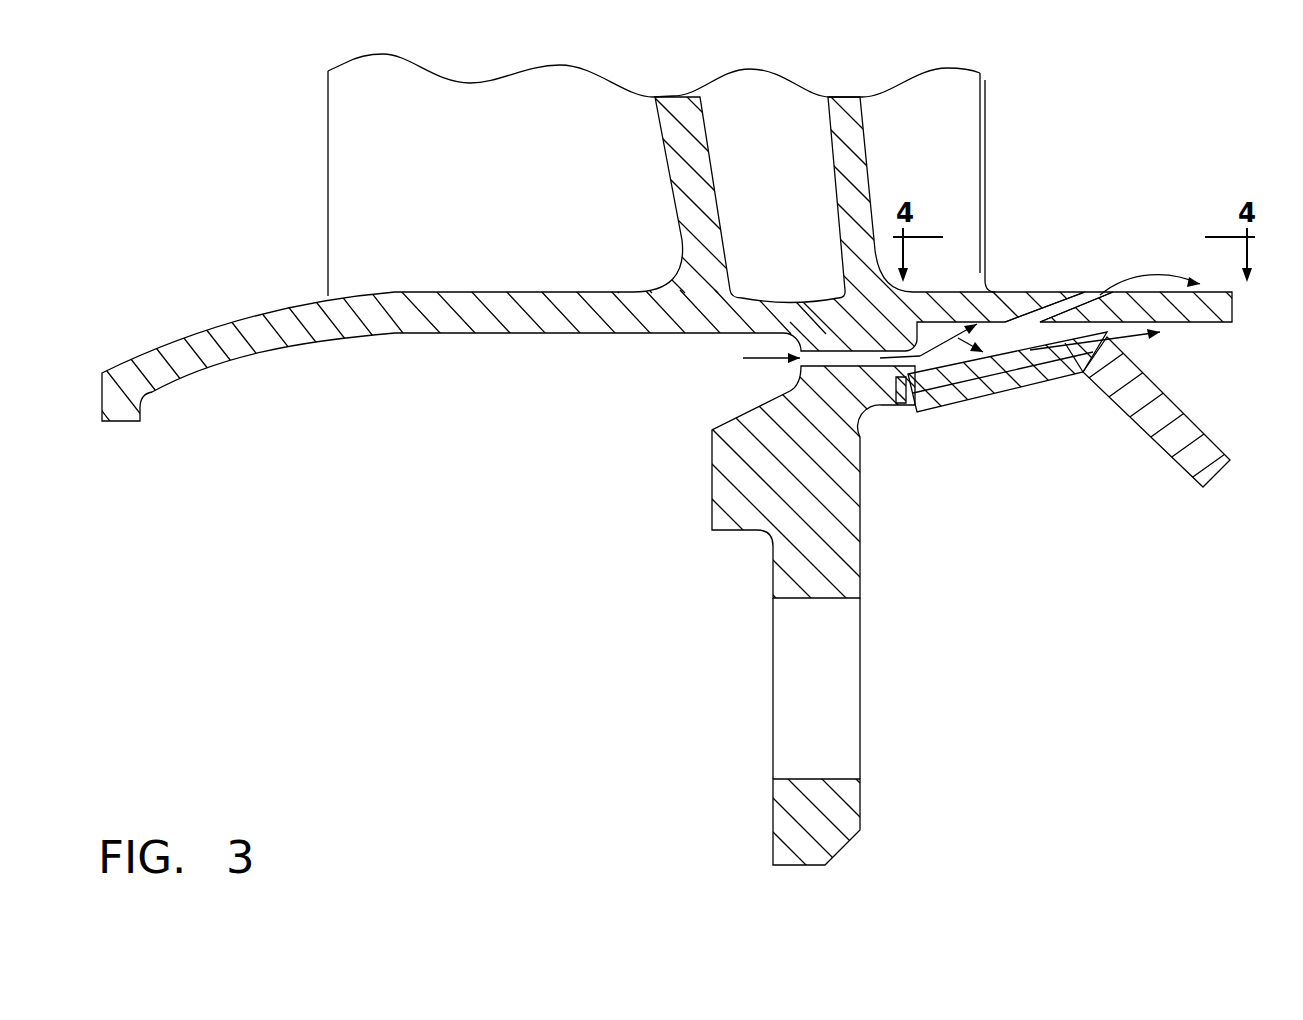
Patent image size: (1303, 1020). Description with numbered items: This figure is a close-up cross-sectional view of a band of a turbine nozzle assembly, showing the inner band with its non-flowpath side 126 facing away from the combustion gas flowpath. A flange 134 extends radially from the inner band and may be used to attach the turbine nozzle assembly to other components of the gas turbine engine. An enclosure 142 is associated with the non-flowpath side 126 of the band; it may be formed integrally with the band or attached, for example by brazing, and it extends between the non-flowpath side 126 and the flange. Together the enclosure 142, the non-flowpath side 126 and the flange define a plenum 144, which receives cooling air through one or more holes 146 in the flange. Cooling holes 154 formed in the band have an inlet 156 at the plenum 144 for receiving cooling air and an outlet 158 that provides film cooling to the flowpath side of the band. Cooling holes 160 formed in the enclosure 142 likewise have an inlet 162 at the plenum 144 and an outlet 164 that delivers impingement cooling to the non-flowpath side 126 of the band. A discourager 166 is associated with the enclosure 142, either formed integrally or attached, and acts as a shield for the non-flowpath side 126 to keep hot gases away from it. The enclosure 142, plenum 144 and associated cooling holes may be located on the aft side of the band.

The non-flowpath side 126 is at (518, 340).
The flange 134 is at (837, 563).
The enclosure 142 is at (924, 396).
The plenum 144 is at (963, 350).
The holes 146 is at (843, 360).
The cooling holes 154 is at (1045, 305).
The inlet 156 is at (920, 335).
The outlet 158 is at (1100, 292).
The cooling holes 160 is at (1065, 343).
The inlet 162 is at (995, 365).
The outlet 164 is at (1140, 342).
The discourager 166 is at (1218, 470).